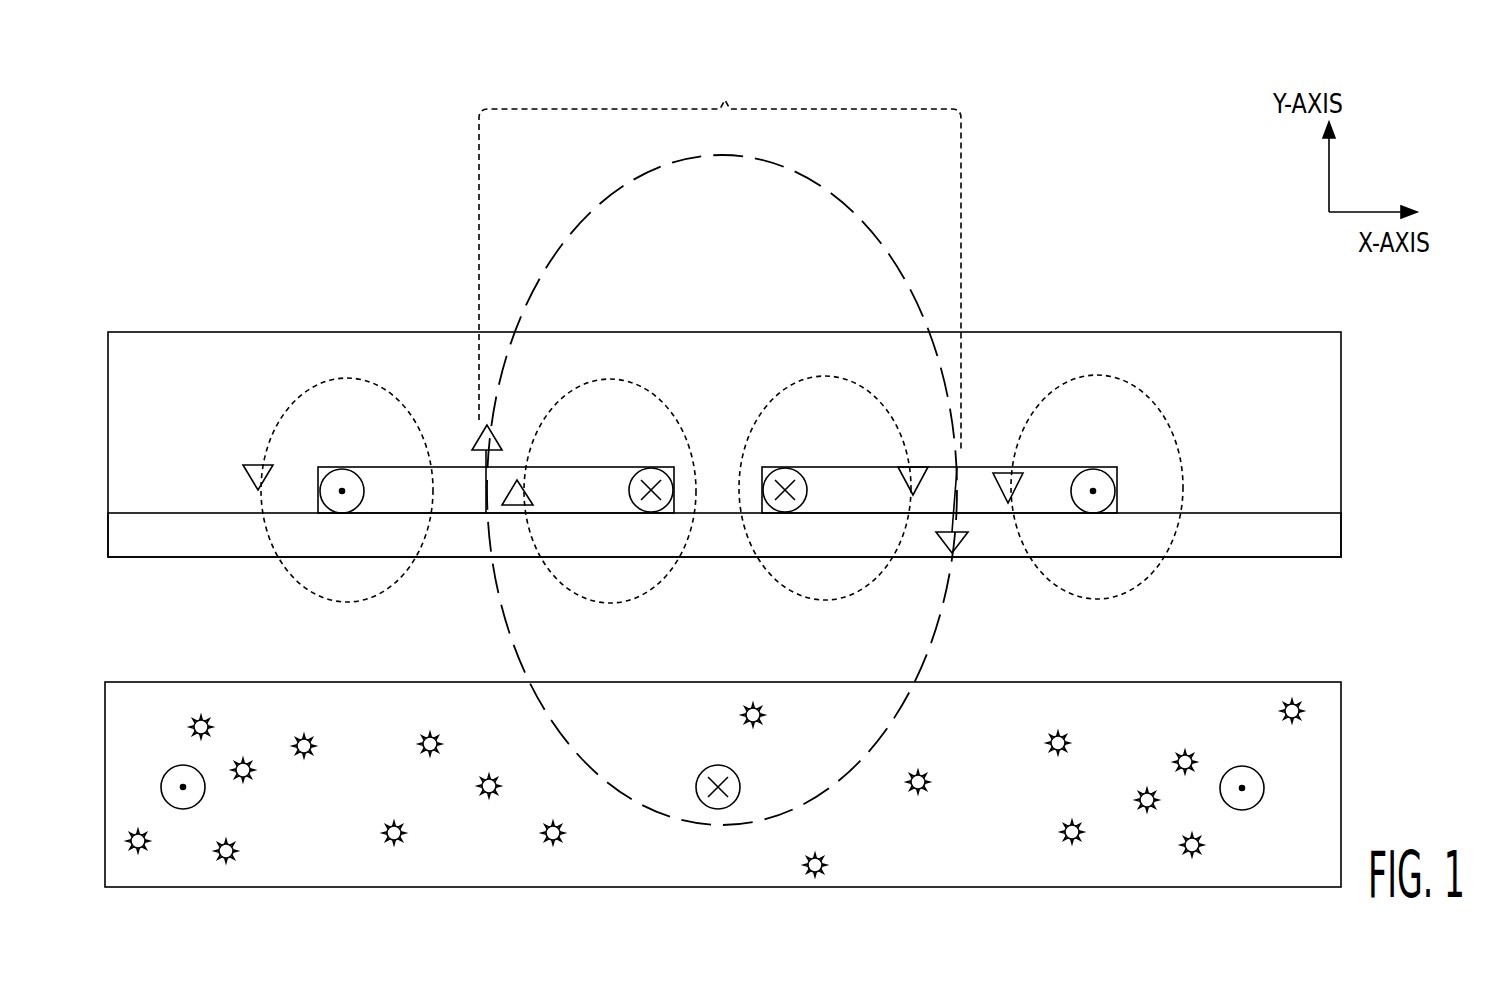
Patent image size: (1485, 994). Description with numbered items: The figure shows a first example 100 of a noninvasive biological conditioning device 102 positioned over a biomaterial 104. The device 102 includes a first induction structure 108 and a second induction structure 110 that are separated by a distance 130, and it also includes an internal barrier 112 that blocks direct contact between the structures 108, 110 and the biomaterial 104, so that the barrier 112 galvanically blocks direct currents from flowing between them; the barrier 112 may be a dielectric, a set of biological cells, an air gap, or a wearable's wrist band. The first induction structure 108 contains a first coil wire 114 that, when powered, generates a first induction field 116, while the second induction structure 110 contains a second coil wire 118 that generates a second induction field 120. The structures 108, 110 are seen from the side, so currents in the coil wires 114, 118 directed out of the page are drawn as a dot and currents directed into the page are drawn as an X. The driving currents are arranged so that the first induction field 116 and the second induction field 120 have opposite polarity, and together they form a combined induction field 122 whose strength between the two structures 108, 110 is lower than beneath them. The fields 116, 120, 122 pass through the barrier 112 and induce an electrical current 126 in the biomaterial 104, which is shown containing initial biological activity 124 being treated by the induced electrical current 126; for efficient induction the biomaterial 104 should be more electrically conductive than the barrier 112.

The first example 100 is at (153, 120).
The noninvasive biological conditioning device 102 is at (160, 332).
The biomaterial 104 is at (1155, 682).
The first induction structure 108 is at (557, 467).
The second induction structure 110 is at (1050, 468).
The internal barrier 112 is at (1325, 535).
The first coil wire 114 is at (343, 470).
The first induction field 116 is at (282, 417).
The second coil wire 118 is at (783, 505).
The second induction field 120 is at (788, 588).
The combined induction field 122 is at (822, 182).
The initial biological activity 124 is at (312, 740).
The electrical current 126 is at (167, 770).
The distance 130 is at (720, 259).